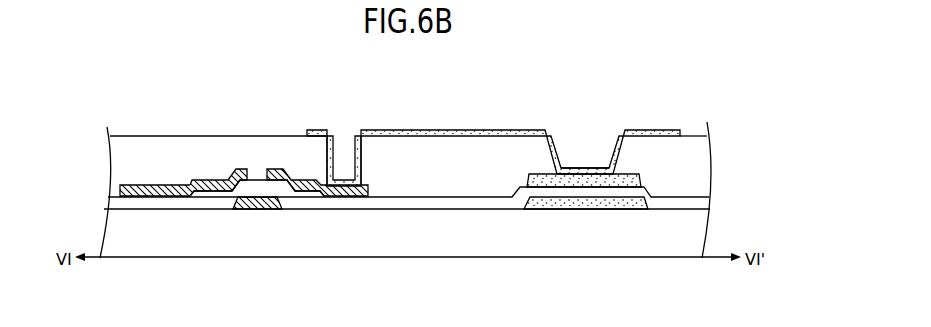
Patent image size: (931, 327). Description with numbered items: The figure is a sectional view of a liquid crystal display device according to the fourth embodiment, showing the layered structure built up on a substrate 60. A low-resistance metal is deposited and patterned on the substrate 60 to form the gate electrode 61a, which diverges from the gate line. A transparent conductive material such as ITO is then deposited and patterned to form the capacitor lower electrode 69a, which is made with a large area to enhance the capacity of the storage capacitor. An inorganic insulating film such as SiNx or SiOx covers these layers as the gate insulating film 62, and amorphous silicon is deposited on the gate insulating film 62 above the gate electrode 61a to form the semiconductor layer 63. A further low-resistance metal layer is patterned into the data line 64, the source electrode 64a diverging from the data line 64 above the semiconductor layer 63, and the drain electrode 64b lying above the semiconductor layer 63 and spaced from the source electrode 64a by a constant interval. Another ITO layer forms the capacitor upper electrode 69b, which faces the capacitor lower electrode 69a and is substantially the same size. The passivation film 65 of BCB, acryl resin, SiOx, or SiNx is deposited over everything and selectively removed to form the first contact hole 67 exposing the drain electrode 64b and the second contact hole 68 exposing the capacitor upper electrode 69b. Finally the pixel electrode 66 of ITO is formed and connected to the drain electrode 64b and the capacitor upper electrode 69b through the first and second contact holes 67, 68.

The substrate 60 is at (692, 230).
The gate electrode 61a is at (255, 203).
The gate insulating film 62 is at (438, 200).
The semiconductor layer 63 is at (273, 199).
The data line 64 is at (160, 198).
The source electrode 64a is at (232, 168).
The drain electrode 64b is at (280, 168).
The passivation film 65 is at (705, 160).
The pixel electrode 66 is at (473, 131).
The first contact hole 67 is at (343, 152).
The second contact hole 68 is at (582, 147).
The capacitor lower electrode 69a is at (562, 200).
The capacitor upper electrode 69b is at (620, 176).